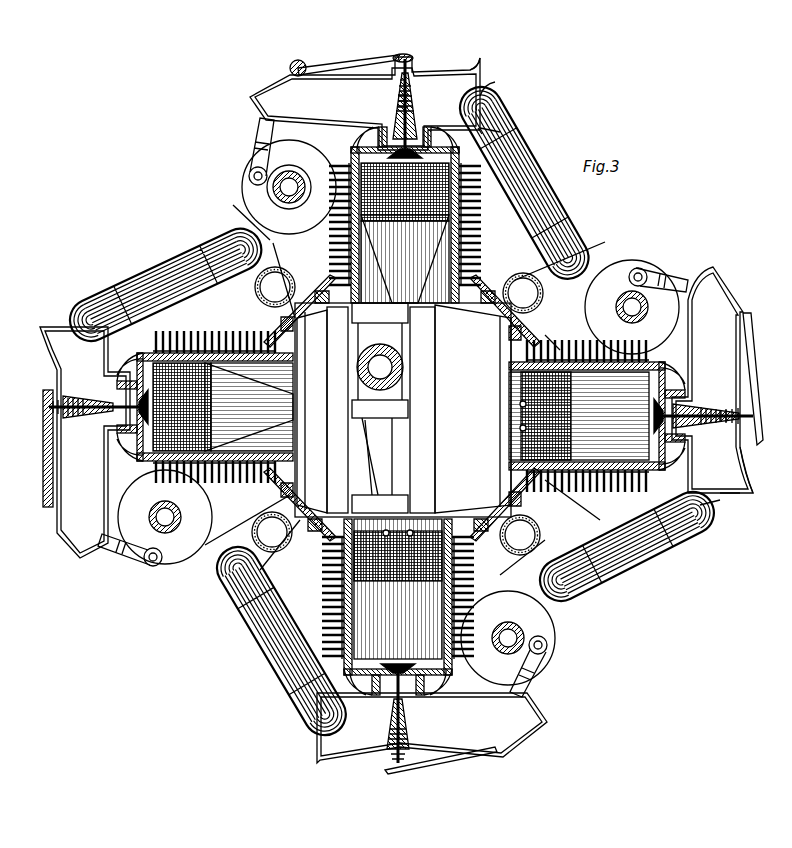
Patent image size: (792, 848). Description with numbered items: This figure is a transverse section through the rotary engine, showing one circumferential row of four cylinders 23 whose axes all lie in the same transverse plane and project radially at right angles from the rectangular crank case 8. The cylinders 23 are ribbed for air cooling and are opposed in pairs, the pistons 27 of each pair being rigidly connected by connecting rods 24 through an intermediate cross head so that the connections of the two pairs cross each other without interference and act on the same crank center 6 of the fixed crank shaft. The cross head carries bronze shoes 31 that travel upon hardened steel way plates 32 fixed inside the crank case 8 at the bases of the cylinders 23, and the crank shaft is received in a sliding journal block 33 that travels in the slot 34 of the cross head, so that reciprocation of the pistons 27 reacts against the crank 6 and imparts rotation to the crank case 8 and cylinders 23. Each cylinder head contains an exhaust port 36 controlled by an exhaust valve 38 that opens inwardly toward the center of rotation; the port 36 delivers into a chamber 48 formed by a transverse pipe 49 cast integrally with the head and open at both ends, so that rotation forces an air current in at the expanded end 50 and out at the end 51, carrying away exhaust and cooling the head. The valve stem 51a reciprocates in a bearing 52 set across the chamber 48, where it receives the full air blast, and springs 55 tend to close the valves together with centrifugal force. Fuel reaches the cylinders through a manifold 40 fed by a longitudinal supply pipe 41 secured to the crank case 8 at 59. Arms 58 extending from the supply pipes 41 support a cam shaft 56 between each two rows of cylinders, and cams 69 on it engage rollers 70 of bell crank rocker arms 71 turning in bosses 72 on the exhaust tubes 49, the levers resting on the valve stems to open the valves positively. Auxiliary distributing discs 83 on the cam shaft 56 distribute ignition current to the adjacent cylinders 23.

The crank 6 is at (403, 368).
The crank case 8 is at (478, 290).
The cylinders 23 is at (592, 478).
The connecting rods 24 is at (336, 333).
The pistons 27 is at (467, 200).
The bronze shoes 31 is at (376, 316).
The way plates 32 is at (488, 311).
The sliding journal block 33 is at (368, 375).
The slot 34 is at (360, 455).
The exhaust ports 36 is at (433, 137).
The exhaust valves 38 is at (362, 713).
The manifold 40 is at (212, 285).
The supply pipe 41 is at (533, 311).
The chamber 48 is at (293, 428).
The transverse pipe 49 is at (446, 80).
The expanded end 50 is at (488, 86).
The end 51 is at (270, 90).
The valve stem 51a is at (394, 102).
The bearing 52 is at (414, 110).
The springs 55 is at (398, 57).
The cam shaft 56 is at (290, 200).
The arms 58 is at (276, 266).
The securing point 59 is at (555, 344).
The cams 69 is at (395, 400).
The rollers 70 is at (246, 176).
The bell crank rocker arms 71 is at (328, 68).
The bosses 72 is at (292, 68).
The auxiliary distributing discs 83 is at (398, 412).